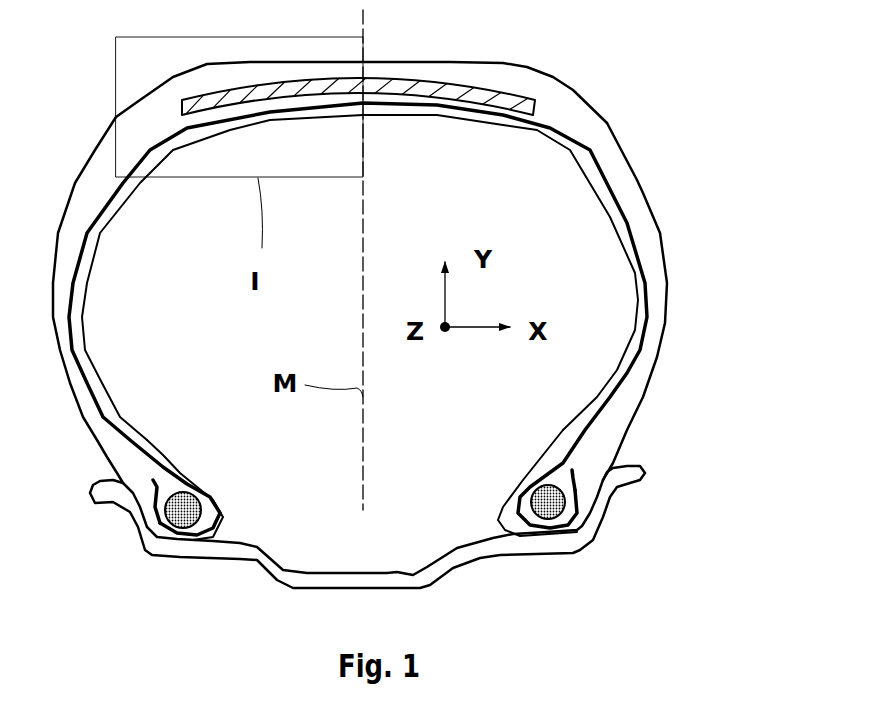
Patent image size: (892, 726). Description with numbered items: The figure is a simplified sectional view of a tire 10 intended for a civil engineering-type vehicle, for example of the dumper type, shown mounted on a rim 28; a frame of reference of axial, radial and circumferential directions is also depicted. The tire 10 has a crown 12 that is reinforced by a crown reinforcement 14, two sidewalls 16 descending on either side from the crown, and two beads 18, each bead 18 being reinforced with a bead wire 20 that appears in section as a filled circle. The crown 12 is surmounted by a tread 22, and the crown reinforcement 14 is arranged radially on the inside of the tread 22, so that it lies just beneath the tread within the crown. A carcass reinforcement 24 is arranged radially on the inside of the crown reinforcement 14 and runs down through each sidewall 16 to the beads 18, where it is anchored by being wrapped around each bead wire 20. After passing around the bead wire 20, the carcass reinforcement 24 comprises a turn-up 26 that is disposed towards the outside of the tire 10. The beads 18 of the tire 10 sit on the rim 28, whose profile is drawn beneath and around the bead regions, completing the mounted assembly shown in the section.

The tire 10 is at (726, 171).
The crown 12 is at (567, 105).
The crown reinforcement 14 is at (478, 84).
The sidewall 16 is at (686, 293).
The bead 18 is at (516, 462).
The bead wire 20 is at (520, 506).
The tread 22 is at (232, 57).
The carcass reinforcement 24 is at (638, 365).
The turn-up 26 is at (580, 473).
The rim 28 is at (607, 503).